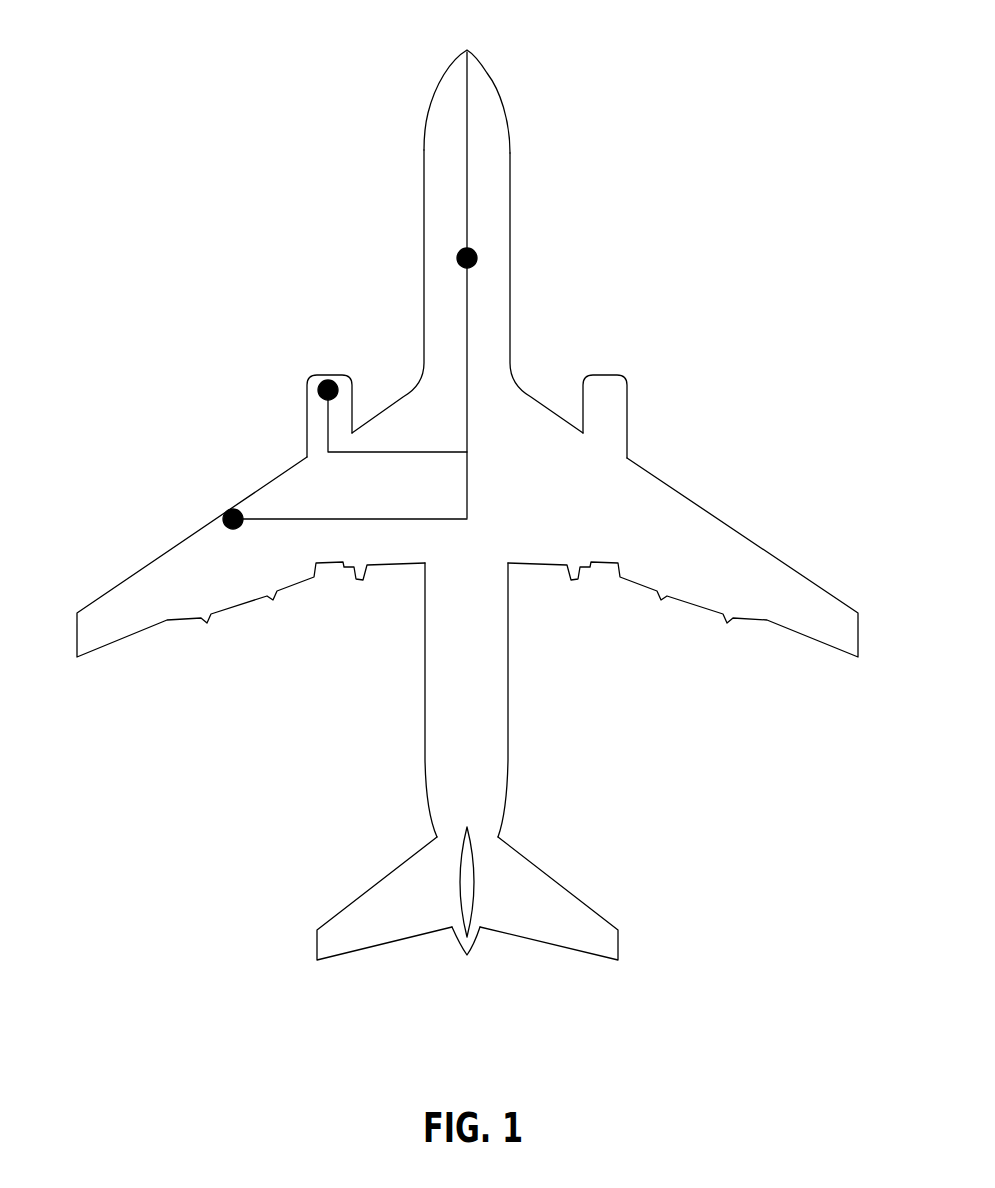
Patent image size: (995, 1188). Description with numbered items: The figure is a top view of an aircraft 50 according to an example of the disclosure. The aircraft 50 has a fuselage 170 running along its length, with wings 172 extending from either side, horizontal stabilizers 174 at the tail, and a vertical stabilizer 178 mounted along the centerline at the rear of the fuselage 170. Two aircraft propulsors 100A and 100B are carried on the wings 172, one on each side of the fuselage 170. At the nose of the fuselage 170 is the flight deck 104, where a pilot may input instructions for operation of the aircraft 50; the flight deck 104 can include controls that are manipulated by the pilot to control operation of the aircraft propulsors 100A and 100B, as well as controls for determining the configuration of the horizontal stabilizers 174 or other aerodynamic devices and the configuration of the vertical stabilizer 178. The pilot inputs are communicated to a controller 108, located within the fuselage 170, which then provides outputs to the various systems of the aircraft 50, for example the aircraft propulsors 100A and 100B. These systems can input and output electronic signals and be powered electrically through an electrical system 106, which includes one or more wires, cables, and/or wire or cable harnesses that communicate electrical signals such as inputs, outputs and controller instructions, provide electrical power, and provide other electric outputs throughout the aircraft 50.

The aircraft 50 is at (432, 107).
The flight deck 104 is at (518, 86).
The controller 108 is at (557, 262).
The electrical system 106 is at (363, 301).
The fuselage 170 is at (425, 235).
The aircraft propulsor 100A is at (313, 377).
The aircraft propulsor 100B is at (623, 380).
The wings 172 is at (123, 577).
The horizontal stabilizers 174 is at (360, 898).
The vertical stabilizer 178 is at (460, 887).